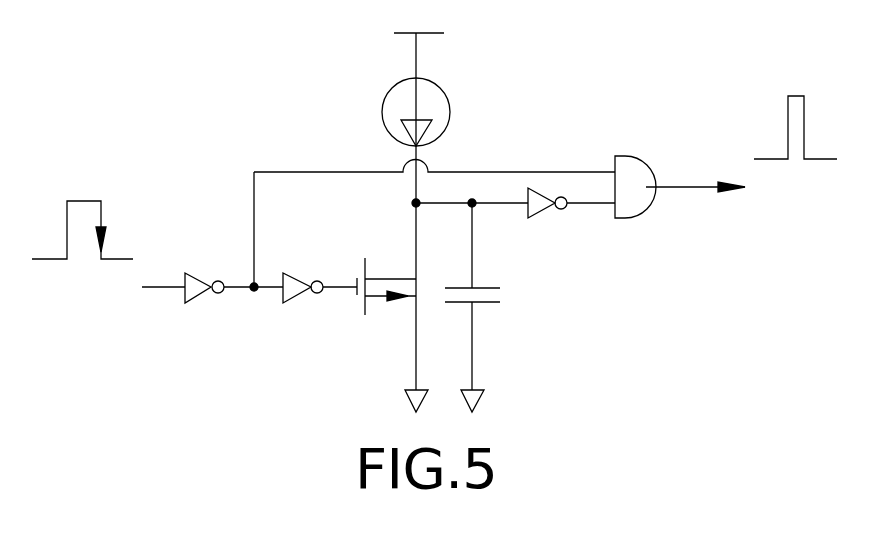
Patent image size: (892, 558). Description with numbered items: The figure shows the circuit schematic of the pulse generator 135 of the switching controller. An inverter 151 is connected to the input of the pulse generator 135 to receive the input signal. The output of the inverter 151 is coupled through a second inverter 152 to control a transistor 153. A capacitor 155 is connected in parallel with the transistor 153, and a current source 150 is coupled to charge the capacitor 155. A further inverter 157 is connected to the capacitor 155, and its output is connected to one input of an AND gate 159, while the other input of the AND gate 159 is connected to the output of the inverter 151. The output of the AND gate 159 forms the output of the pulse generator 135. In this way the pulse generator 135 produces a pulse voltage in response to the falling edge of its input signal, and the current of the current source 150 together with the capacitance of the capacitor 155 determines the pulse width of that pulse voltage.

The pulse generator 135 is at (100, 52).
The current source 150 is at (442, 85).
The inverter 151 is at (205, 273).
The inverter 152 is at (298, 277).
The transistor 153 is at (380, 305).
The capacitor 155 is at (490, 303).
The inverter 157 is at (538, 219).
The AND gate 159 is at (640, 213).